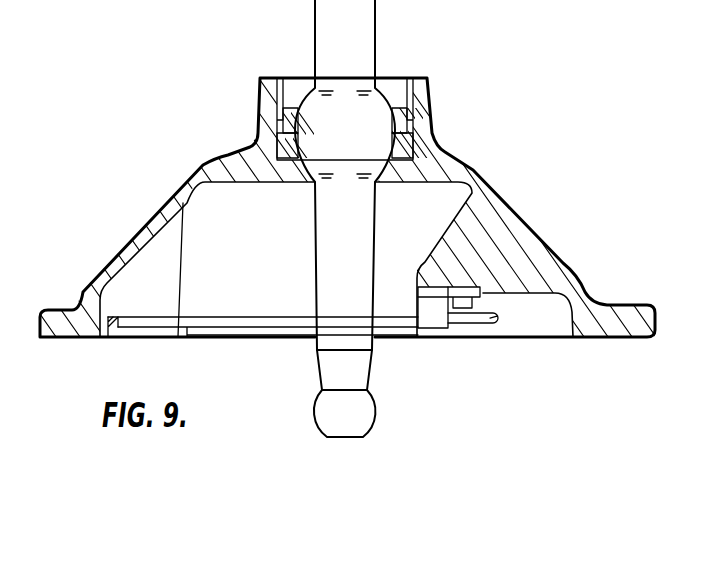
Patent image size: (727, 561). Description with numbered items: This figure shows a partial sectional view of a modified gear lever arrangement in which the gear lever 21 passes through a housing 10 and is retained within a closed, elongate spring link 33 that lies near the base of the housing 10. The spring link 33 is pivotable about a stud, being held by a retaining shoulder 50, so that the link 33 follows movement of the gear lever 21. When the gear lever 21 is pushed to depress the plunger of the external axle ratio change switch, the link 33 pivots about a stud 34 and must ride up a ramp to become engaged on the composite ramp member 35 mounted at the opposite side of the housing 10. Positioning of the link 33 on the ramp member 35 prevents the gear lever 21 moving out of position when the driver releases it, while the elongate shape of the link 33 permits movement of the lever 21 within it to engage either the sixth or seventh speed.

The housing 10 is at (557, 272).
The gear lever 21 is at (350, 231).
The spring link 33 is at (241, 318).
The stud 34 is at (143, 322).
The composite ramp member 35 is at (433, 312).
The retaining shoulder 50 is at (178, 330).